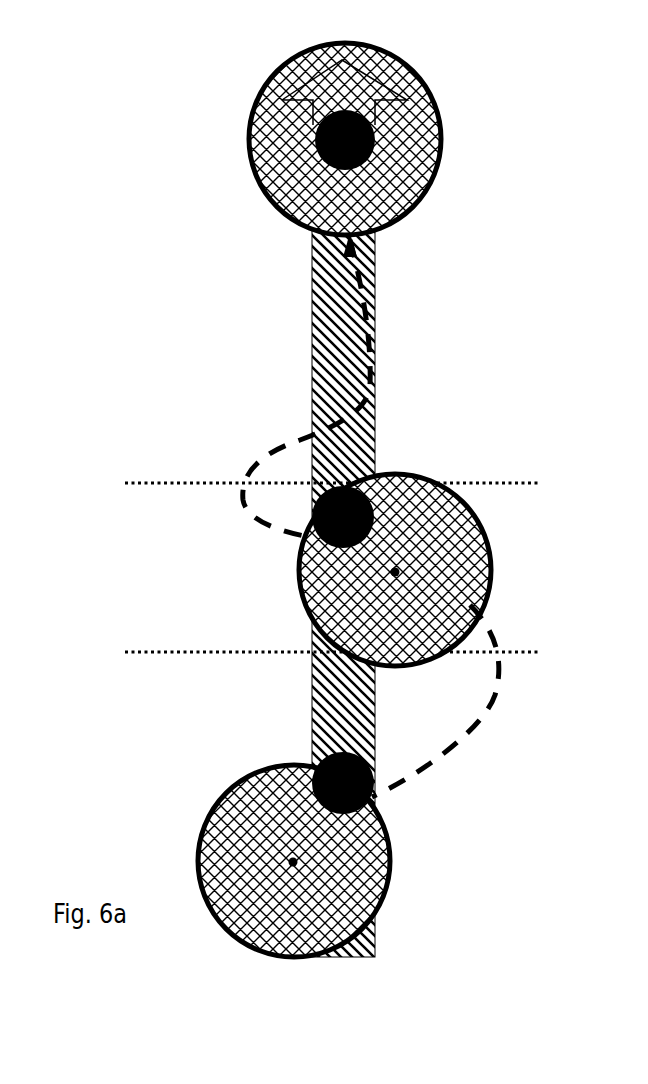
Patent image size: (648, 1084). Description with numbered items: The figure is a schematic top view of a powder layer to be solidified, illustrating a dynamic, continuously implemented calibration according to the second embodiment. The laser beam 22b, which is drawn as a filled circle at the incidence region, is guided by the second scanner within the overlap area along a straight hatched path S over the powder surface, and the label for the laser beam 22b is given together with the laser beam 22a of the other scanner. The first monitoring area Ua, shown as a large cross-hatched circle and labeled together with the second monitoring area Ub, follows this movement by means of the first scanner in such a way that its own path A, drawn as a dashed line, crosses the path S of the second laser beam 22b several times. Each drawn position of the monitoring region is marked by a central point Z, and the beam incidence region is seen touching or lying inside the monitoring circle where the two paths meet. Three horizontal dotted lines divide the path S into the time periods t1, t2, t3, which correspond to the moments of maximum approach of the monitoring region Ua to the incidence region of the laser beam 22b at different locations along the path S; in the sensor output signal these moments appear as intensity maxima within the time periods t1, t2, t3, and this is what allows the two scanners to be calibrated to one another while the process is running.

The laser beam 22b is at (478, 128).
The roller (first drive roller) 22a is at (377, 132).
The first monitoring area Ua is at (267, 139).
The circumference of roller Ub is at (277, 127).
The path S is at (328, 370).
The center of roller Z is at (343, 701).
The path of contact point A is at (450, 740).
The time period t1 is at (331, 682).
The time period t2 is at (331, 599).
The time period t3 is at (331, 420).